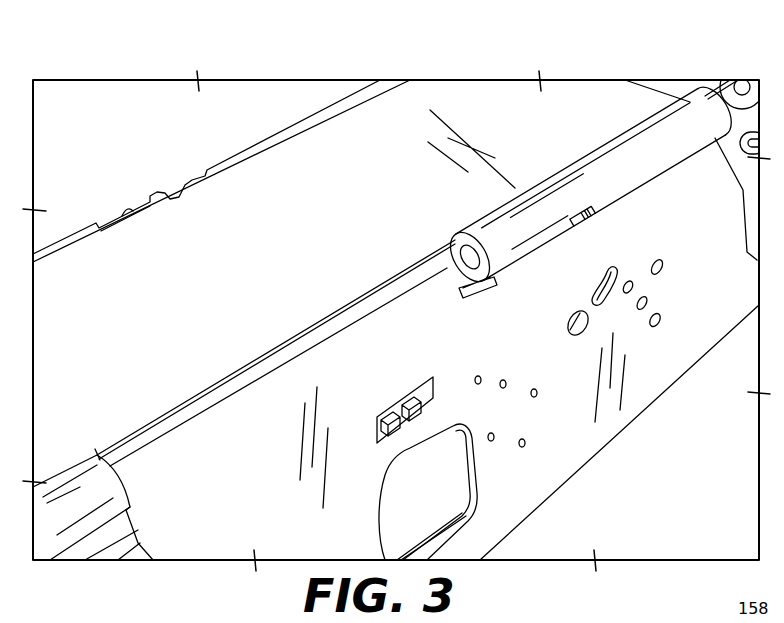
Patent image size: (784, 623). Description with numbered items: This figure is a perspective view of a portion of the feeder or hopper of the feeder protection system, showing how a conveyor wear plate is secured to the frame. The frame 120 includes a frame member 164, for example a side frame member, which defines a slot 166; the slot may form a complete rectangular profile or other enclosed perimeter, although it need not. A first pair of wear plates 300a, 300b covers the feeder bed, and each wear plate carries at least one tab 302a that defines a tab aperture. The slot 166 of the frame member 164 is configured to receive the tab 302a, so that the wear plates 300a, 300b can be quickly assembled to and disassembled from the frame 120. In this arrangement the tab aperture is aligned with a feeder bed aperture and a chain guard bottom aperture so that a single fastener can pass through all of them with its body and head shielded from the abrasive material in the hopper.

The frame 120 is at (580, 444).
The frame member 164 is at (660, 377).
The slot 166 is at (437, 375).
The wear plate 300a is at (200, 365).
The wear plate 300b is at (263, 129).
The tab 302a is at (393, 440).